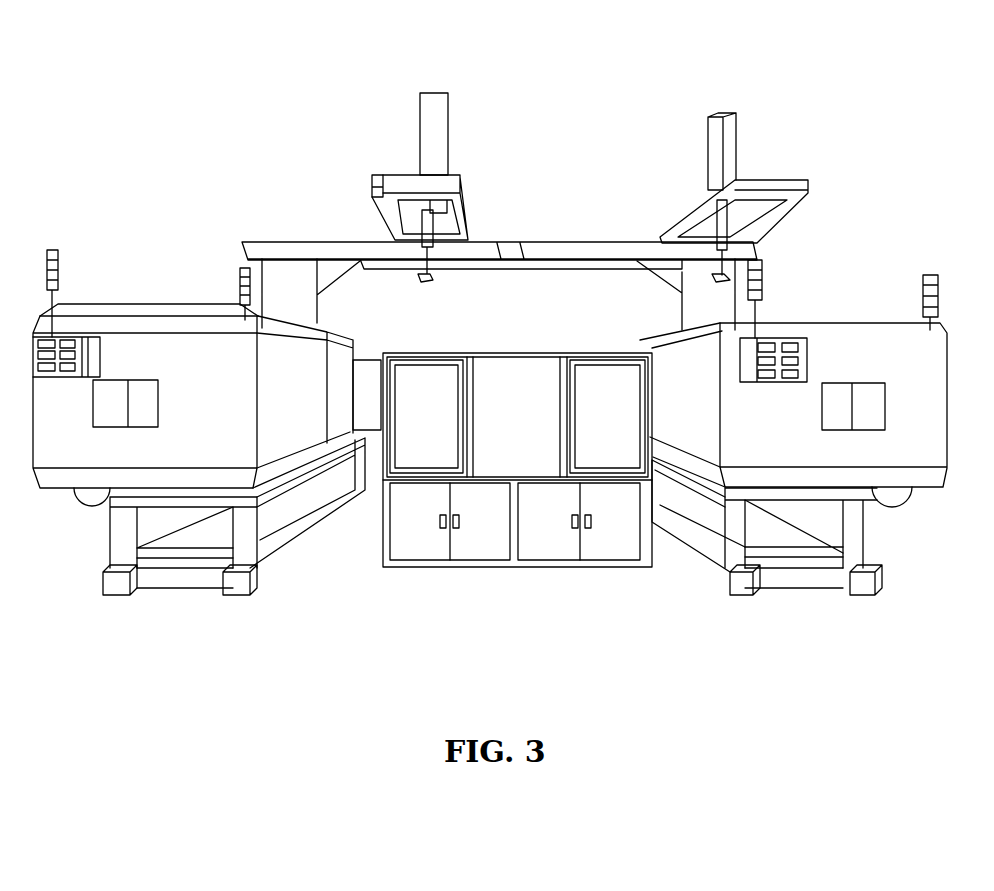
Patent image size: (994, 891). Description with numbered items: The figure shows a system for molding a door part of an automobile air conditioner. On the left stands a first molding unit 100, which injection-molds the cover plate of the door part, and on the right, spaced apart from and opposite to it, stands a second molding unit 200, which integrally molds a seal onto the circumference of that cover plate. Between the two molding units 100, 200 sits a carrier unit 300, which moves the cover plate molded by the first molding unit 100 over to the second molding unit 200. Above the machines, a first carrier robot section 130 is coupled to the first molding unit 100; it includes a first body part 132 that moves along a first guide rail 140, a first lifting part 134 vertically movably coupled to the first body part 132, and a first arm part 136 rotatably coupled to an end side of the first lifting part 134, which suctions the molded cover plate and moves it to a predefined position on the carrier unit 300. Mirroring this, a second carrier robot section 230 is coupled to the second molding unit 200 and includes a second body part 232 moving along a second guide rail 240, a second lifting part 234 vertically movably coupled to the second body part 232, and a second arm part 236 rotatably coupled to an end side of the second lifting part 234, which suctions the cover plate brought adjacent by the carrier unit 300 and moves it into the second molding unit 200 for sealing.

The first molding unit 100 is at (80, 432).
The first carrier robot section 130 is at (361, 177).
The first body part 132 is at (368, 183).
The first lifting part 134 is at (436, 103).
The first arm part 136 is at (427, 283).
The first guide rail 140 is at (287, 248).
The second molding unit 200 is at (798, 443).
The second carrier robot section 230 is at (766, 154).
The second body part 232 is at (782, 187).
The second lifting part 234 is at (728, 113).
The second arm part 236 is at (763, 277).
The second guide rail 240 is at (592, 255).
The carrier unit 300 is at (548, 542).